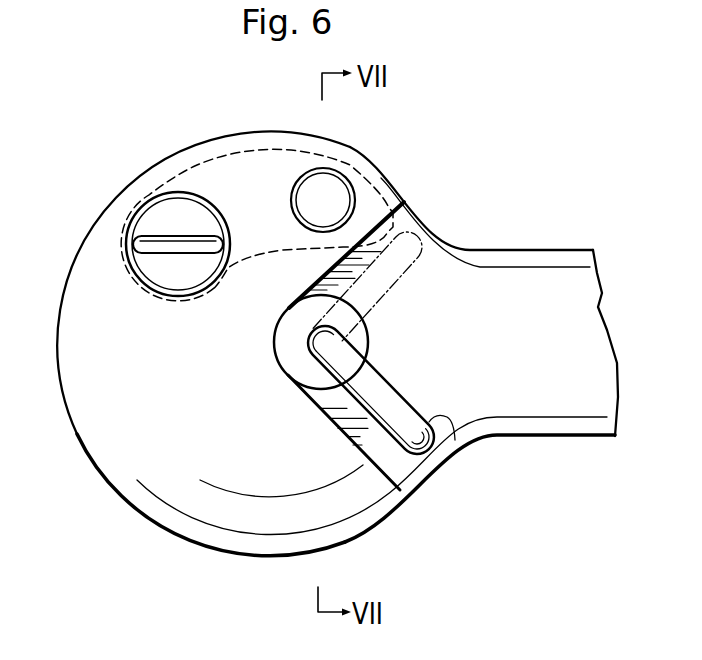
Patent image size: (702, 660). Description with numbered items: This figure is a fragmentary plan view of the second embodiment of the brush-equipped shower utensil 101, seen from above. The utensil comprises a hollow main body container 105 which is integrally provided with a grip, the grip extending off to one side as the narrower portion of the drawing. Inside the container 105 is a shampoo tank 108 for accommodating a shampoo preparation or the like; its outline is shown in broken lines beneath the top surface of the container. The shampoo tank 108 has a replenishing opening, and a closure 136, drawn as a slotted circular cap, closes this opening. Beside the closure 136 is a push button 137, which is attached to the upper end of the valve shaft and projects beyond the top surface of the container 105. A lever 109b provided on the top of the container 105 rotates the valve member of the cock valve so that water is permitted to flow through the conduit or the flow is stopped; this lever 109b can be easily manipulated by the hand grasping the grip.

The brush-equipped shower utensil 101 is at (126, 160).
The hollow main body container 105 is at (395, 170).
The shampoo tank 108 is at (217, 157).
The closure 136 is at (177, 210).
The push button 137 is at (332, 192).
The lever 109b is at (455, 443).